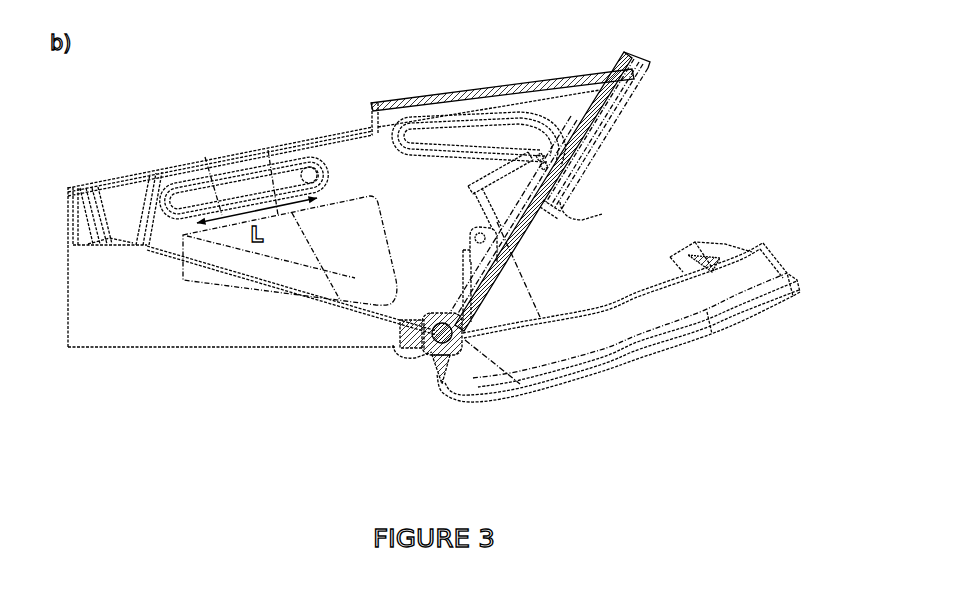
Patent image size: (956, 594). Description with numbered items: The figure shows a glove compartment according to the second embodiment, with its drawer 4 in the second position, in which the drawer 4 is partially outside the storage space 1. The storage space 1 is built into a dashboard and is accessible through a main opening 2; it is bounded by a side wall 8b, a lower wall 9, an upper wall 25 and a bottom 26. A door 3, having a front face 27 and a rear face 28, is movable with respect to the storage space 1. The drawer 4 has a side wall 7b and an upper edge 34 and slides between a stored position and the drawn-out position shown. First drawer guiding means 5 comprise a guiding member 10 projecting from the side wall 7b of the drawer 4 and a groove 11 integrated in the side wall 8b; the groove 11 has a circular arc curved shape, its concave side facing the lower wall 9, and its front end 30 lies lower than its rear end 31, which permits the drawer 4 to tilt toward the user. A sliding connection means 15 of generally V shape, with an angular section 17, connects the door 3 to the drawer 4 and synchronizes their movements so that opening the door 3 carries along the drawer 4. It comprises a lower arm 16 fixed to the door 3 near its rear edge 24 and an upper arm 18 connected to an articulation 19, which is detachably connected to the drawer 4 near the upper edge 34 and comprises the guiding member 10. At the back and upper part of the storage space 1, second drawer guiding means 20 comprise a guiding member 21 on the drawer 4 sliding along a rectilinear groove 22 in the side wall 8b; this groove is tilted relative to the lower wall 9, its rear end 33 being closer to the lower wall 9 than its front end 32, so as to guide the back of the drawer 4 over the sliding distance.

The storage space 1 is at (189, 322).
The main opening 2 is at (601, 188).
The door 3 is at (692, 349).
The drawer 4 is at (683, 252).
The first drawer guiding means 5 is at (541, 115).
The side wall of the drawer 7b is at (585, 303).
The side wall of the glove compartment 8b is at (121, 201).
The lower wall 9 is at (255, 348).
The guiding member 10 is at (532, 150).
The groove 11 is at (463, 134).
The sliding connection means 15 is at (461, 216).
The lower arm 16 is at (521, 296).
The angular section 17 is at (461, 248).
The upper arm 18 is at (485, 182).
The articulation 19 is at (575, 140).
The second drawer guiding means 20 is at (287, 151).
The guiding member 21 is at (312, 167).
The rectilinear groove 22 is at (219, 195).
The rear edge of the door 24 is at (418, 381).
The upper wall 25 is at (589, 106).
The bottom 26 is at (57, 224).
The front face 27 is at (661, 362).
The rear face 28 is at (774, 243).
The front end of the groove 30 is at (559, 195).
The rear end of the groove 31 is at (392, 125).
The front end of the rectilinear groove 32 is at (330, 199).
The rear end of the rectilinear groove 33 is at (163, 179).
The upper edge 34 is at (669, 239).